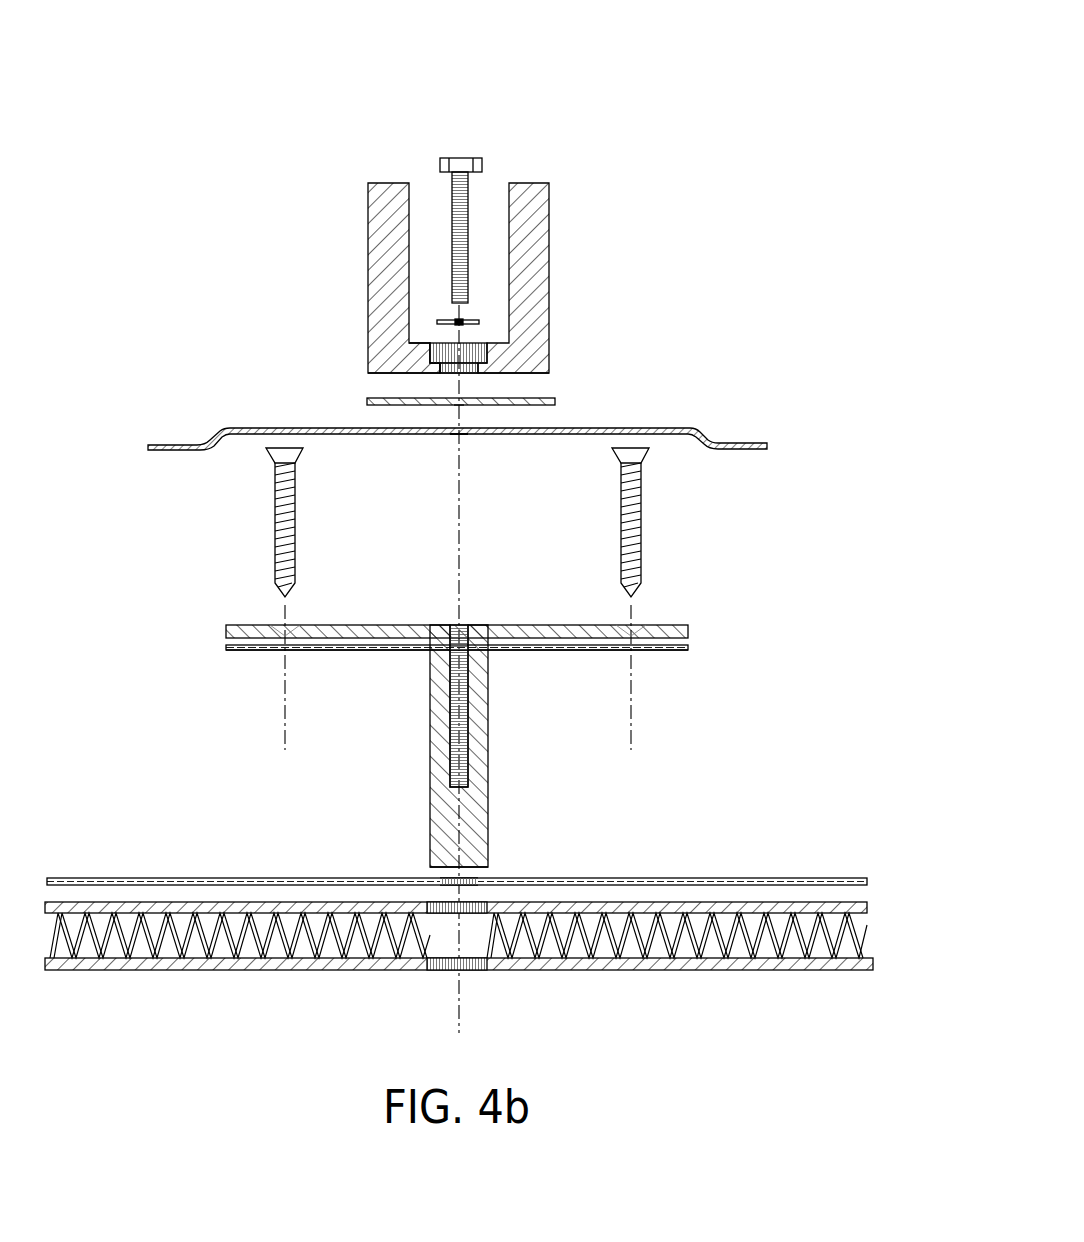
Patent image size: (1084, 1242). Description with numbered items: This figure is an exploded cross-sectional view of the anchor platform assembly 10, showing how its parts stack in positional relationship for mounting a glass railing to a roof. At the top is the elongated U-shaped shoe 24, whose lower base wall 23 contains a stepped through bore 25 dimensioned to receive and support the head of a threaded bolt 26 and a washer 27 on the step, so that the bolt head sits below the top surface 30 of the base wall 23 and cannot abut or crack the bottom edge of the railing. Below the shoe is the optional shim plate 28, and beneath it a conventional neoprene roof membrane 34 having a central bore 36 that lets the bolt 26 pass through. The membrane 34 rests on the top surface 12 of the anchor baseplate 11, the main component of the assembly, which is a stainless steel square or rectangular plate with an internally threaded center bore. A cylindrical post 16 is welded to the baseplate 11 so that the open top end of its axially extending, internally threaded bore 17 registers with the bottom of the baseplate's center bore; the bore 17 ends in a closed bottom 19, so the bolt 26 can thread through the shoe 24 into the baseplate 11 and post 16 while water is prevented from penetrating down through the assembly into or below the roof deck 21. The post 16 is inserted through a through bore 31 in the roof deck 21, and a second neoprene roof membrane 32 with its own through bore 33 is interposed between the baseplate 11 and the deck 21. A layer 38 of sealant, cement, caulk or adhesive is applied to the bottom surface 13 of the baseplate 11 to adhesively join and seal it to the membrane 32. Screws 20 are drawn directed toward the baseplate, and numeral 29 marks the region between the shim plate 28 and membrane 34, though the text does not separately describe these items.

The anchor platform assembly 10 is at (449, 128).
The anchor baseplate 11 is at (550, 620).
The top surface 12 is at (683, 618).
The bottom surface 13 is at (689, 639).
The cylindrical post 16 is at (430, 752).
The internally-threaded bore 17 is at (458, 730).
The closed bottom 19 is at (488, 866).
The screws 20 is at (277, 520).
The roof deck 21 is at (876, 903).
The base wall 23 is at (394, 375).
The U-shaped shoe 24 is at (551, 277).
The through bore 25 is at (470, 348).
The threaded bolt 26 is at (469, 193).
The washer 27 is at (437, 320).
The shim plate 28 is at (556, 399).
The gap 29 is at (457, 403).
The top surface 30 is at (424, 340).
The through bore 31 is at (441, 970).
The roof membrane 32 is at (803, 878).
The through bore 33 is at (447, 879).
The roof membrane 34 is at (745, 444).
The central bore 36 is at (457, 436).
The adhesive layer 38 is at (689, 650).